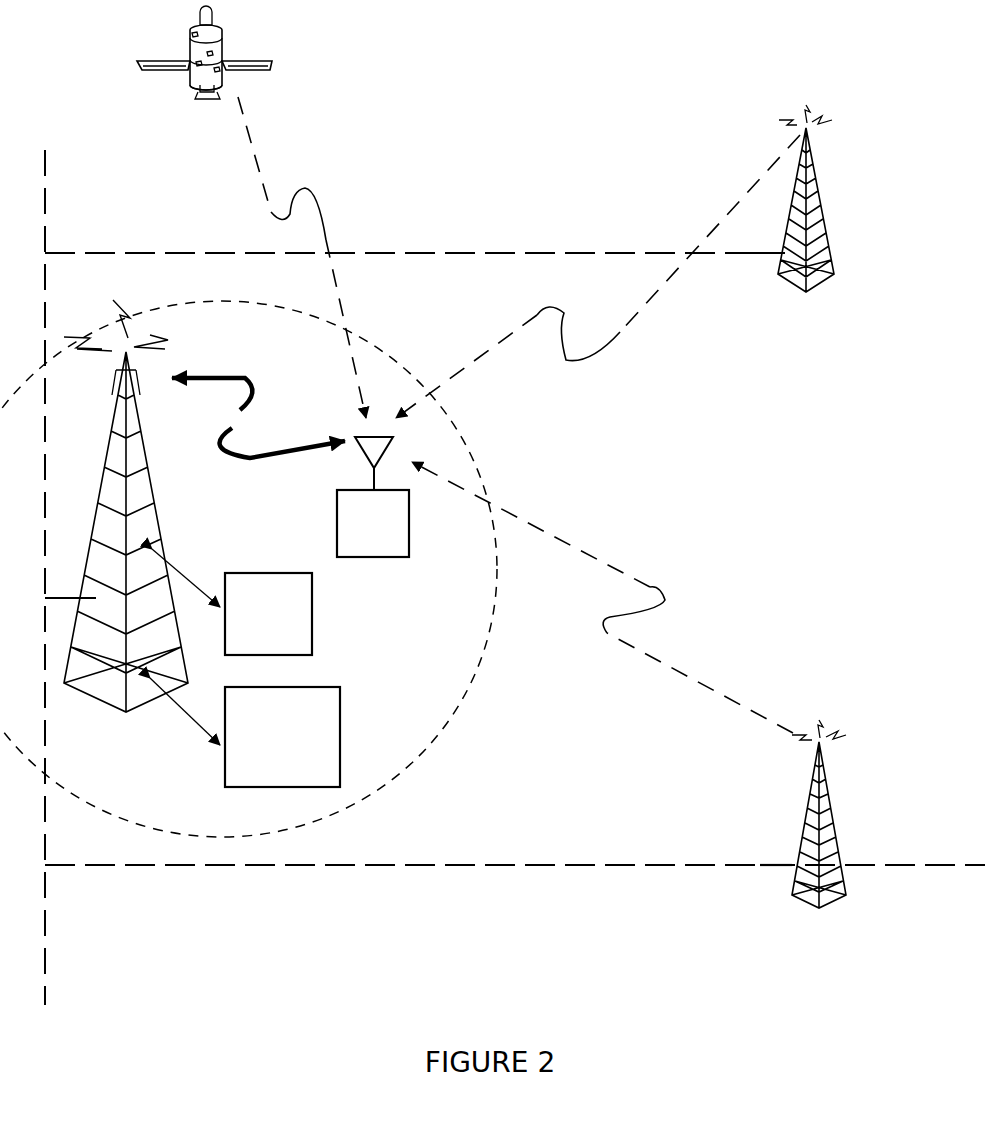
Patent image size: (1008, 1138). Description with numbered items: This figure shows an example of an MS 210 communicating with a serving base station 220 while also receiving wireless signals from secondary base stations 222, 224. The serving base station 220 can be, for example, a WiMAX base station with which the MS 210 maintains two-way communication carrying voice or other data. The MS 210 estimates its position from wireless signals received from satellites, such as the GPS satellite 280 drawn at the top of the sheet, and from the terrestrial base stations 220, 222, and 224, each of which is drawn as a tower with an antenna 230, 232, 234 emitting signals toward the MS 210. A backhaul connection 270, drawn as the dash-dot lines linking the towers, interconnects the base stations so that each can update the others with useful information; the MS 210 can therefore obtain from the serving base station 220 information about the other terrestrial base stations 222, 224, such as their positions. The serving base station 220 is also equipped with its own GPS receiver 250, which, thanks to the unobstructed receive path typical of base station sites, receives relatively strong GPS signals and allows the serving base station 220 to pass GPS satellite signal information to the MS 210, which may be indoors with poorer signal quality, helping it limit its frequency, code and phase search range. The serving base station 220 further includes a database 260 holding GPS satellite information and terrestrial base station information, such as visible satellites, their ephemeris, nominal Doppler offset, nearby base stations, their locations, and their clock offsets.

The MS 210 is at (373, 497).
The serving base station 220 is at (117, 578).
The secondary base station 222 is at (804, 252).
The secondary base station 224 is at (819, 867).
The antenna of serving base station 230 is at (140, 288).
The antenna of secondary base station 232 is at (773, 133).
The antenna of secondary base station 234 is at (803, 712).
The GPS receiver 250 is at (232, 602).
The database 260 is at (245, 732).
The backhaul connection 270 is at (500, 955).
The GPS satellite 280 is at (220, 27).